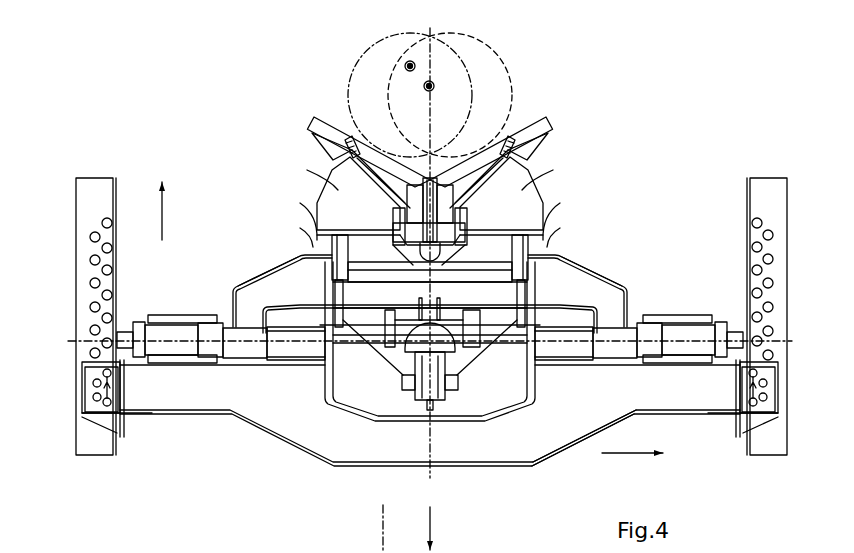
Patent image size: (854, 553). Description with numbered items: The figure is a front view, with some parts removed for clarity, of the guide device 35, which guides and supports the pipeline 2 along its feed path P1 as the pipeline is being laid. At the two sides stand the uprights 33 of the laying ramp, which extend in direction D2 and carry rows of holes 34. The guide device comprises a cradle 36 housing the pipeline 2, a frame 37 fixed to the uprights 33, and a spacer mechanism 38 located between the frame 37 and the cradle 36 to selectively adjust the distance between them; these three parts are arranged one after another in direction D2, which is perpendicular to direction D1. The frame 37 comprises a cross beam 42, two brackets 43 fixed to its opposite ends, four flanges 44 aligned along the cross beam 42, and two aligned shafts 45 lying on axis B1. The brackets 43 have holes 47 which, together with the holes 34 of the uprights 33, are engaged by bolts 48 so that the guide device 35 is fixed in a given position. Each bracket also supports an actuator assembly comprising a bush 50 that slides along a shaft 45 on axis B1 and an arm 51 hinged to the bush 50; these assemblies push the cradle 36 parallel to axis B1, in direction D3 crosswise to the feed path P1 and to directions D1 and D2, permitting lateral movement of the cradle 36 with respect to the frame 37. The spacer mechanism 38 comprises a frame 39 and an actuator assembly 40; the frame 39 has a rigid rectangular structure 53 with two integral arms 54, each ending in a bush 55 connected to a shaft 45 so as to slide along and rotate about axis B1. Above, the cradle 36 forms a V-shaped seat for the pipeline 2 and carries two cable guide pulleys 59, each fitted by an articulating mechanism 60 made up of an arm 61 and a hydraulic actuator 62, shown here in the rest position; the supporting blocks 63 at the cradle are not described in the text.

The pipeline 2 is at (500, 78).
The uprights 33 is at (95, 192).
The holes 34 is at (90, 238).
The guide device 35 is at (653, 172).
The cradle 36 is at (555, 115).
The frame 37 is at (325, 465).
The spacer mechanism 38 is at (560, 245).
The frame 39 is at (533, 245).
The actuator assembly 40 is at (470, 367).
The cross beam 42 is at (540, 443).
The brackets 43 is at (82, 422).
The flanges 44 is at (140, 327).
The shafts 45 is at (292, 347).
The holes 47 is at (93, 398).
The bolts 48 is at (107, 393).
The bush 50 is at (210, 343).
The arm 51 is at (180, 323).
The rigid rectangular structure 53 is at (330, 250).
The arms 54 is at (265, 292).
The bushes 55 is at (245, 347).
The cable guide pulleys 59 is at (330, 218).
The articulating mechanism 60 is at (347, 546).
The arm 61 is at (501, 546).
The actuator 62 is at (552, 546).
The support block 63 is at (342, 190).
The axis B1 is at (70, 347).
The direction D1 is at (410, 60).
The direction D2 is at (163, 225).
The direction D3 is at (633, 455).
The feed path P1 is at (434, 83).